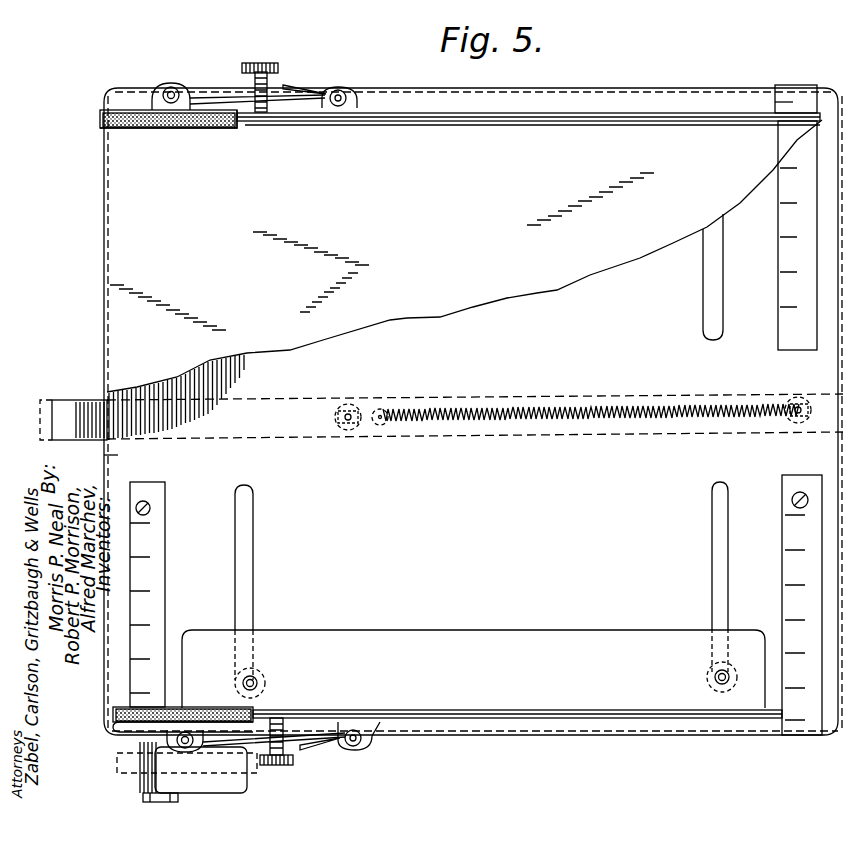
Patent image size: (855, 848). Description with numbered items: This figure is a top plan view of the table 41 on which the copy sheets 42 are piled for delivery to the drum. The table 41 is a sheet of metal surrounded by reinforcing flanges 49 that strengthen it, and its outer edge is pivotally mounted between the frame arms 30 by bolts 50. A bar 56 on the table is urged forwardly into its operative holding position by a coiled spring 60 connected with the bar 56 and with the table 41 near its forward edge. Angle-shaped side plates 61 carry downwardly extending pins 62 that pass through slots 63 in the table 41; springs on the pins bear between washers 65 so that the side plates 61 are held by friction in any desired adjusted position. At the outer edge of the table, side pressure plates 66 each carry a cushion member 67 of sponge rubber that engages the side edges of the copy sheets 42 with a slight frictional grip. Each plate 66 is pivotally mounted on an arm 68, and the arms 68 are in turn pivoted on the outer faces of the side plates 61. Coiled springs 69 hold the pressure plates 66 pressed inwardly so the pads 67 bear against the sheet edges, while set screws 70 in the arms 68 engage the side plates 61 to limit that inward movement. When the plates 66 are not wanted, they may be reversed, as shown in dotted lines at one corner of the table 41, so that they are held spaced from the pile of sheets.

The frame arms 30 is at (235, 783).
The table 41 is at (120, 457).
The copy sheets 42 is at (545, 275).
The reinforcing flanges 49 is at (106, 212).
The bolts 50 is at (168, 802).
The bar 56 is at (66, 400).
The coiled spring 60 is at (480, 408).
The side plates 61 is at (481, 113).
The pins 62 is at (255, 677).
The slots 63 is at (713, 278).
The washers 65 is at (262, 680).
The side pressure plates 66 is at (207, 122).
The cushion member 67 is at (149, 120).
The arm 68 is at (298, 735).
The coiled springs 69 is at (332, 88).
The set screws 70 is at (258, 63).